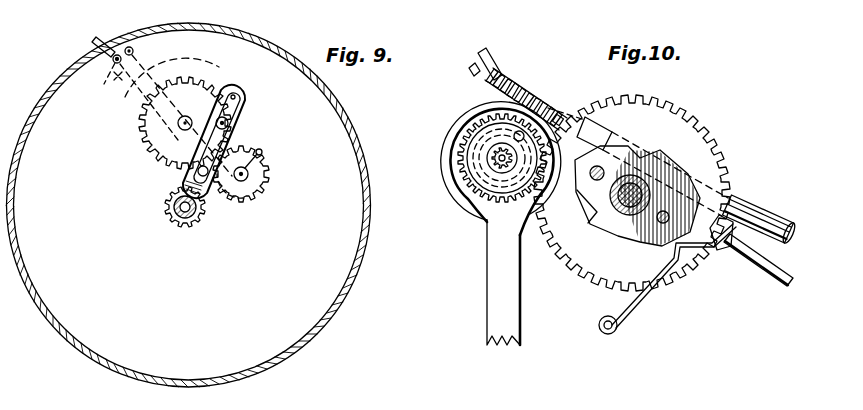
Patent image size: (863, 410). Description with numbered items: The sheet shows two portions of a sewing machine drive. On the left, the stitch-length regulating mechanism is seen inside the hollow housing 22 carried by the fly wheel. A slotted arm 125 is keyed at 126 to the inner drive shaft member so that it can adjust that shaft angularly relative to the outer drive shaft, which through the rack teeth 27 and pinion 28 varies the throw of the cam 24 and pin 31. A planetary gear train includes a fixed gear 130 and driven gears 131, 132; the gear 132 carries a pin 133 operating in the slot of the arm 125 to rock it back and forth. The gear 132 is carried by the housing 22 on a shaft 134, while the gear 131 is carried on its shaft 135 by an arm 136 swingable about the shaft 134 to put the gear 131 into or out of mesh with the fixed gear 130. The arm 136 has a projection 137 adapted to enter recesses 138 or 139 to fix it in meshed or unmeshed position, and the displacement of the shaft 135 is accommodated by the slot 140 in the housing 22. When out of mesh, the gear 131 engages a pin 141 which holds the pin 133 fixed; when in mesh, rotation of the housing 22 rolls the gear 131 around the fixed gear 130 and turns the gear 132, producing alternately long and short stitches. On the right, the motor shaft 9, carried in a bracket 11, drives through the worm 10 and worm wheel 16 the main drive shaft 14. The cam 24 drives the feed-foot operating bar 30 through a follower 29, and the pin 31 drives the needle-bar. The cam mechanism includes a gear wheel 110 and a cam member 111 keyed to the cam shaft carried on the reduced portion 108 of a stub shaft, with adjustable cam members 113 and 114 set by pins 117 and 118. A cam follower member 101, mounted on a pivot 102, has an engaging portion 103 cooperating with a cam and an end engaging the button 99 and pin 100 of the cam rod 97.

In FIG. 9, the driven gear 132 is at (163, 147).
In FIG. 9, the shaft 134 is at (178, 126).
In FIG. 9, the recess 139 is at (134, 51).
In FIG. 9, the recess 138 is at (130, 97).
In FIG. 9, the projection 137 is at (95, 47).
In FIG. 9, the arm 136 is at (180, 68).
In FIG. 9, the slotted arm 125 is at (266, 80).
In FIG. 9, the pin 133 is at (230, 122).
In FIG. 9, the shaft 135 is at (252, 174).
In FIG. 9, the driven gear 131 is at (264, 187).
In FIG. 9, the pin 141 is at (263, 152).
In FIG. 9, the slot 140 is at (238, 212).
In FIG. 9, the fixed gear 130 is at (190, 230).
In FIG. 9, the keyed connection 126 is at (168, 215).
In FIG. 10, the hollow housing 22 is at (355, 133).
In FIG. 10, the cam 24 is at (475, 128).
In FIG. 10, the feed-foot operating bar 30 is at (510, 323).
In FIG. 10, the worm wheel 16 is at (462, 110).
In FIG. 10, the follower 29 is at (452, 120).
In FIG. 10, the pinion 28 is at (488, 192).
In FIG. 10, the main drive shaft 14 is at (480, 170).
In FIG. 10, the rack teeth 27 is at (497, 207).
In FIG. 10, the pin 31 is at (553, 112).
In FIG. 10, the worm 10 is at (515, 84).
In FIG. 10, the bracket 11 is at (495, 58).
In FIG. 10, the gear wheel 110 is at (698, 120).
In FIG. 10, the engaging portion 103 is at (672, 258).
In FIG. 10, the pin 118 is at (640, 234).
In FIG. 10, the reduced portion 108 is at (612, 219).
In FIG. 10, the pin 117 is at (592, 193).
In FIG. 10, the adjustable cam member 113 is at (601, 129).
In FIG. 10, the cam member 111 is at (640, 152).
In FIG. 10, the adjustable cam member 114 is at (662, 165).
In FIG. 10, the pin 100 is at (731, 190).
In FIG. 10, the shaft 9 is at (752, 210).
In FIG. 10, the button 99 is at (721, 252).
In FIG. 10, the cam rod 97 is at (770, 288).
In FIG. 10, the cam follower member 101 is at (645, 306).
In FIG. 10, the pivot 102 is at (604, 335).